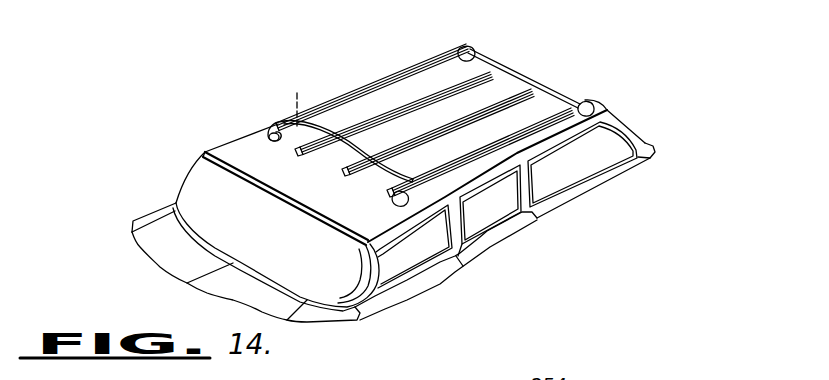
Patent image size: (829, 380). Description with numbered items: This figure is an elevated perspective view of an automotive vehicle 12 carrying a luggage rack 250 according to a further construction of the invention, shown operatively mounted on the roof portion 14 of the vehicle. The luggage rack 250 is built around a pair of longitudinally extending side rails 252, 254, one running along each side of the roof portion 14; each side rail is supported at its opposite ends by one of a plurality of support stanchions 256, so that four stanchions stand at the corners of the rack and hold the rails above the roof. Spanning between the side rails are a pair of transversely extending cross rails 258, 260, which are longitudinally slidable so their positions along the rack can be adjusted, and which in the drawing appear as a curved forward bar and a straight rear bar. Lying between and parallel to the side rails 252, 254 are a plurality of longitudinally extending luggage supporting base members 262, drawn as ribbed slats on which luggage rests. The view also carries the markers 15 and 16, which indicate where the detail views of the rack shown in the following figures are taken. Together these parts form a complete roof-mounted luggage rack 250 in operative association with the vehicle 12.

The automotive vehicle 12 is at (147, 212).
The roof portion 14 is at (221, 150).
The section line 15- 15 is at (308, 90).
The section line 16- 16 is at (375, 135).
The luggage rack 250 is at (435, 121).
The side rail 252 is at (565, 122).
The side rail 254 is at (338, 92).
The support stanchion 256 is at (276, 121).
The cross rail 258 is at (328, 127).
The cross rail 260 is at (553, 90).
The luggage supporting base member 262 is at (388, 190).